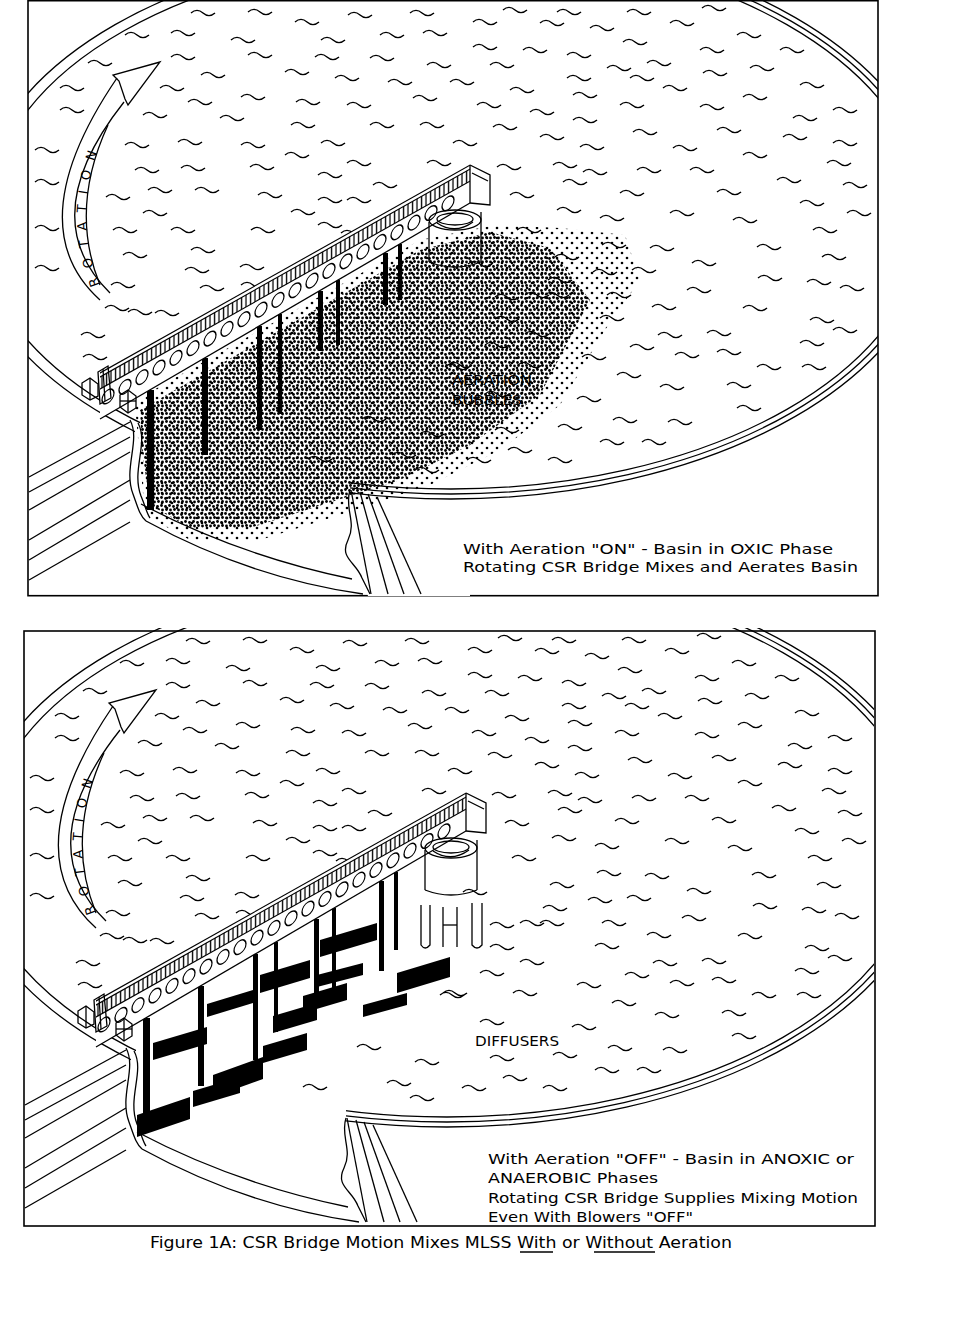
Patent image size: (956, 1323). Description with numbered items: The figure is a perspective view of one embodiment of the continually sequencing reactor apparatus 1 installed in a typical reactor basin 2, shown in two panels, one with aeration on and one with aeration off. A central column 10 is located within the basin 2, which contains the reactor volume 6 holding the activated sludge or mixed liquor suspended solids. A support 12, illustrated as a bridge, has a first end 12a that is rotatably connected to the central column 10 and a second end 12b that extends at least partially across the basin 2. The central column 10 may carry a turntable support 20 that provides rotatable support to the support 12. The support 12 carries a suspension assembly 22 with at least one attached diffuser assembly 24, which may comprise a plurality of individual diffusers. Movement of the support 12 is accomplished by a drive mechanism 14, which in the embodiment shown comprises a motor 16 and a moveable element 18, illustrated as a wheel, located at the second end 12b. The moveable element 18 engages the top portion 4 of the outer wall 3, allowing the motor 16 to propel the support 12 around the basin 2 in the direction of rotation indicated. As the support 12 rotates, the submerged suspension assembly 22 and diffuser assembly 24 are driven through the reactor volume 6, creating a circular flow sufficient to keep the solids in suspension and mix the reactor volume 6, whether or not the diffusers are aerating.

The CSR apparatus 1 is at (450, 552).
The reactor basin 2 is at (725, 440).
The outer wall 3 is at (357, 491).
The top portion 4 is at (812, 34).
The reactor volume 6 is at (250, 863).
The central column 10 is at (482, 228).
The support 12 is at (283, 268).
The first end 12a is at (455, 176).
The second end 12b is at (103, 368).
The drive mechanism 14 is at (131, 423).
The motor 16 is at (97, 372).
The moveable element 18 is at (92, 432).
The turntable support 20 is at (480, 195).
The suspension assembly 22 is at (208, 312).
The diffuser assembly 24 is at (252, 514).